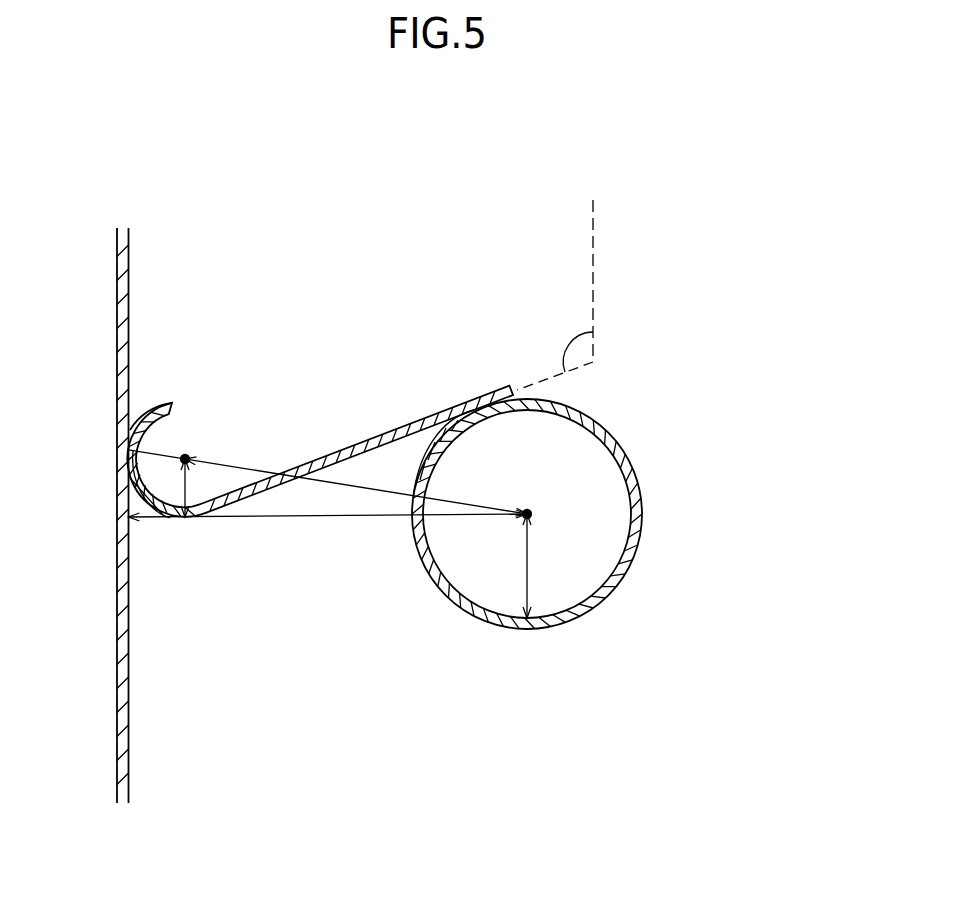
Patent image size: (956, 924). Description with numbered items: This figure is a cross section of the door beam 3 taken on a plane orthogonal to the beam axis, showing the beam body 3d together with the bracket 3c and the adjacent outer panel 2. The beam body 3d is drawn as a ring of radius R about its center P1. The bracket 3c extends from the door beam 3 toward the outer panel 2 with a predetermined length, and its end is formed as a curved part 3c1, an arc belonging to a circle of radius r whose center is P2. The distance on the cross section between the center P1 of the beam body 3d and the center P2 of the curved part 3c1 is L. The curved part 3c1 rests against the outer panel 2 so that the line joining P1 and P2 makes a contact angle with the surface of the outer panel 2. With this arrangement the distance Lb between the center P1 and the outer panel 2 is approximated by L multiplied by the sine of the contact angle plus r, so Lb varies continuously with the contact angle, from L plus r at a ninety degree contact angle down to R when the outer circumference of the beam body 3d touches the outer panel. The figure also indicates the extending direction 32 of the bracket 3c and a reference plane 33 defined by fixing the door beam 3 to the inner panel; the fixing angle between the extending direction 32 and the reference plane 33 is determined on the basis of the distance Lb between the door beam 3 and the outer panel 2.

The outer panel 2 is at (118, 690).
The door beam 3 is at (474, 478).
The bracket 3c is at (378, 433).
The curved part 3c1 is at (150, 417).
The beam body 3d is at (600, 594).
The extending direction 32 is at (548, 377).
The reference plane 33 is at (593, 270).
The center of the beam body P1 is at (530, 512).
The center of the curved part P2 is at (185, 455).
The distance between centers L is at (266, 470).
The distance between the beam body center and the outer panel Lb is at (293, 518).
The radius of the curved part r is at (188, 483).
The radius of the beam body R is at (528, 568).